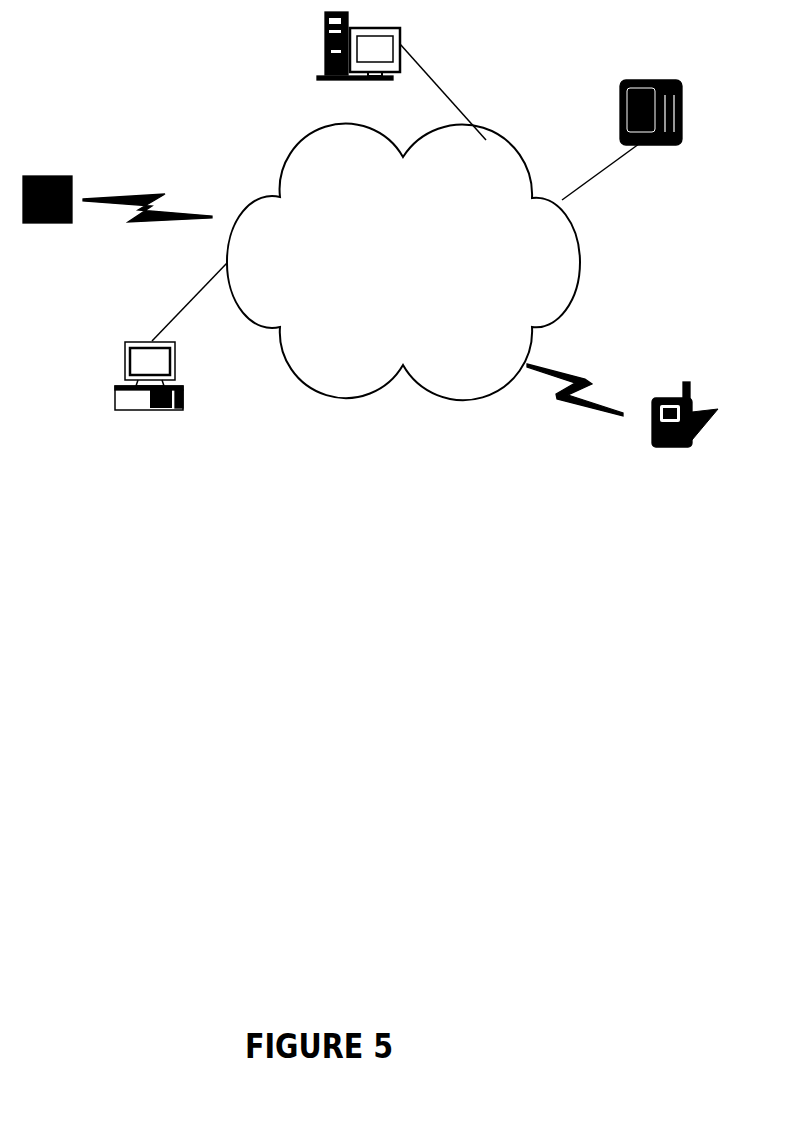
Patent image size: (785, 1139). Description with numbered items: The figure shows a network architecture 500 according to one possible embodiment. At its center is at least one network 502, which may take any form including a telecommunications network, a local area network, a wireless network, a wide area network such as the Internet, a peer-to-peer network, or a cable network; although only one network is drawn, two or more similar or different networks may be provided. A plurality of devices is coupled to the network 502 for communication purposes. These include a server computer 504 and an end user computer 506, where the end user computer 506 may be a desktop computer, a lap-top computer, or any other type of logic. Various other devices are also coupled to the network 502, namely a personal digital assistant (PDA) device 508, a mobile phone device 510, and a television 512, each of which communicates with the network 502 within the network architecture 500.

The network architecture 500 is at (322, 640).
The network 502 is at (455, 393).
The server computer 504 is at (325, 48).
The end user computer 506 is at (115, 390).
The personal digital assistant (PDA) device 508 is at (50, 176).
The mobile phone device 510 is at (650, 400).
The television 512 is at (633, 75).